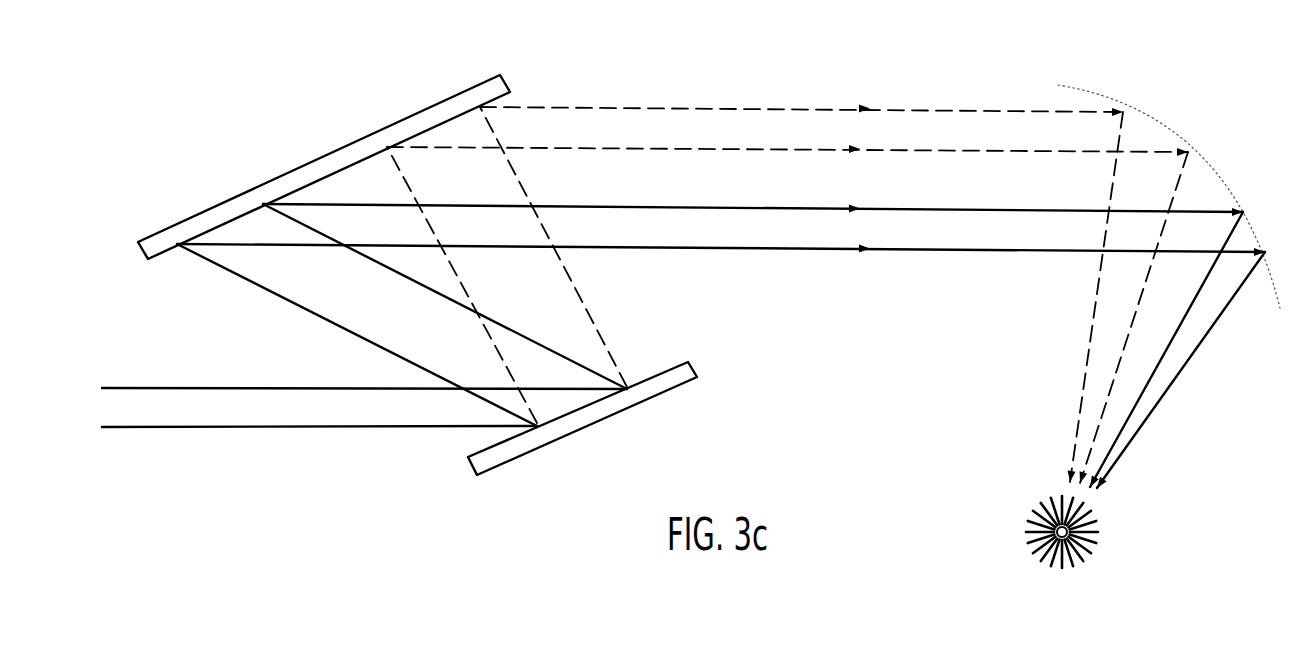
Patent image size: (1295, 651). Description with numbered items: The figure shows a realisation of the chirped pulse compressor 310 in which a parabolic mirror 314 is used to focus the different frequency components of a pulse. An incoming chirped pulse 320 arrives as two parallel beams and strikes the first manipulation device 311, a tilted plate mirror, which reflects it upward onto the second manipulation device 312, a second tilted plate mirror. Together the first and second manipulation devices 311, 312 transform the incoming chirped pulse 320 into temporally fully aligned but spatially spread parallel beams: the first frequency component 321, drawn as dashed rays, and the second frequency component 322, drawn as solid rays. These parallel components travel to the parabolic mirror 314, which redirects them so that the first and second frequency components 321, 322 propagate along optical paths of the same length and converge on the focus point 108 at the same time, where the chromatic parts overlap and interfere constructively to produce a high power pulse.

The focus point 108 is at (1098, 527).
The chirped pulse compressor 310 is at (614, 57).
The first manipulation device 311 is at (623, 408).
The second manipulation device 312 is at (322, 155).
The parabolic mirror 314 is at (1171, 196).
The incoming chirped pulse 320 is at (168, 427).
The first frequency component 321 is at (760, 117).
The second frequency component 322 is at (765, 240).